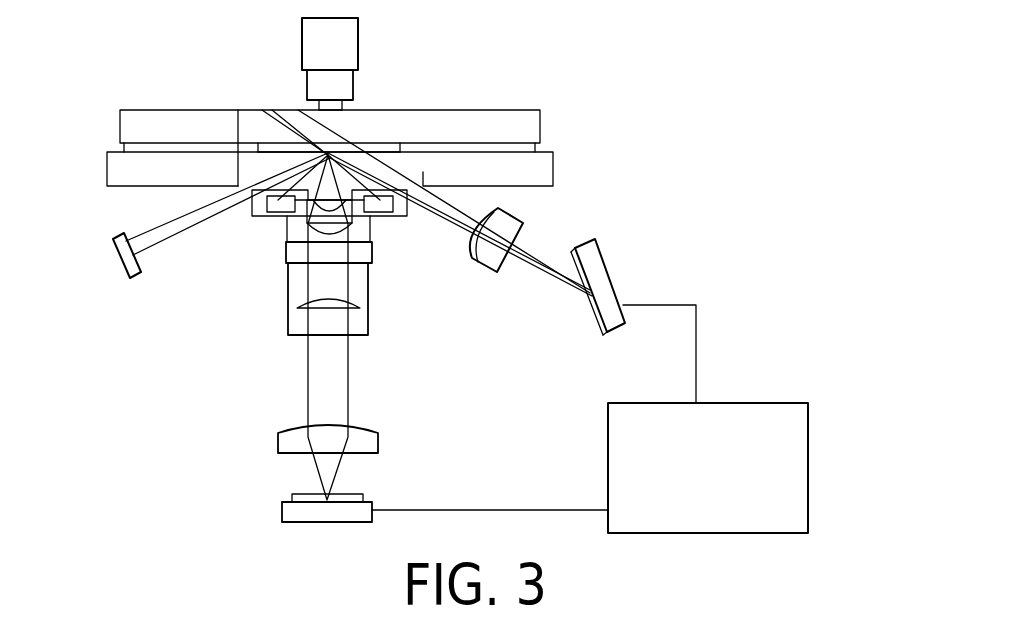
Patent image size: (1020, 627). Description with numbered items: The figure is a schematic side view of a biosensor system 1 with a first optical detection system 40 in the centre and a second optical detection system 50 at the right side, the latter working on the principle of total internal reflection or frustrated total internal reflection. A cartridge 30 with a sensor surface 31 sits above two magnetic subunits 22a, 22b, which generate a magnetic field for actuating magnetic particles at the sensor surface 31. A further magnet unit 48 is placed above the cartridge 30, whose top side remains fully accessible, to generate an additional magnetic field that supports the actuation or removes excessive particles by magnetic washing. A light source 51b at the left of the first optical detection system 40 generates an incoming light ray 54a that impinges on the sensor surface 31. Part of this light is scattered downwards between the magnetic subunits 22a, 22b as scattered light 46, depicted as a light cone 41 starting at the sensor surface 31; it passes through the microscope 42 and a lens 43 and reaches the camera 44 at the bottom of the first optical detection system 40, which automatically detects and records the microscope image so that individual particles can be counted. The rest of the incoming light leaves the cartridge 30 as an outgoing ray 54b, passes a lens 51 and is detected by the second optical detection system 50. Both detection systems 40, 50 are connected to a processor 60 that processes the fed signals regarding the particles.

The biosensor system 1 is at (756, 92).
The magnetic subunit 22a is at (276, 213).
The magnetic subunit 22b is at (384, 213).
The cartridge 30 is at (496, 123).
The sensor surface 31 is at (390, 150).
The first optical detection system 40 is at (256, 345).
The light cone 41 is at (328, 155).
The microscope 42 is at (297, 318).
The lens 43 is at (295, 443).
The camera 44 is at (293, 498).
The scattered light 46 is at (310, 376).
The further magnet unit 48 is at (306, 39).
The second optical detection system 50 is at (597, 260).
The lens 51 is at (490, 258).
The light source 51b is at (127, 270).
The incoming light ray 54a is at (183, 228).
The outgoing ray 54b is at (443, 217).
The processor 60 is at (760, 418).